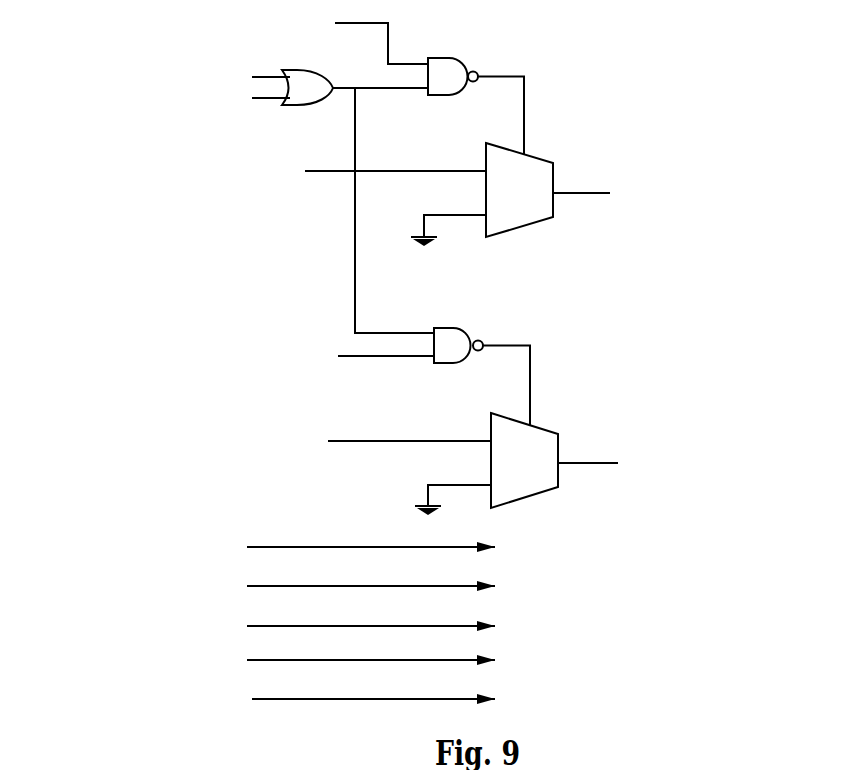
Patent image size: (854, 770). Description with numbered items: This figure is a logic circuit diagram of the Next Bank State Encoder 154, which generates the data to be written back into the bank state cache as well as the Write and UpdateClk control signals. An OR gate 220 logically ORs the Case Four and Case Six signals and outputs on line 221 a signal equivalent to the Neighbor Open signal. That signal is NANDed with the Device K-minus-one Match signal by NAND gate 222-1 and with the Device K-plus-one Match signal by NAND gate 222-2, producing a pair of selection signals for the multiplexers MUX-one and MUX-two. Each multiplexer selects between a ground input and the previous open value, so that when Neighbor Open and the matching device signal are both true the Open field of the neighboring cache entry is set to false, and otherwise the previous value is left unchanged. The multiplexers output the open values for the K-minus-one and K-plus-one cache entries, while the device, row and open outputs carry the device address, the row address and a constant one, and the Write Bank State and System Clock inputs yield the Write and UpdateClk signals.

The Next Bank State Encoder 154 is at (656, 106).
The OR gate 220 is at (319, 71).
The line 221 is at (356, 121).
The NAND gate 222-1 is at (473, 61).
The NAND gate 222-2 is at (482, 330).